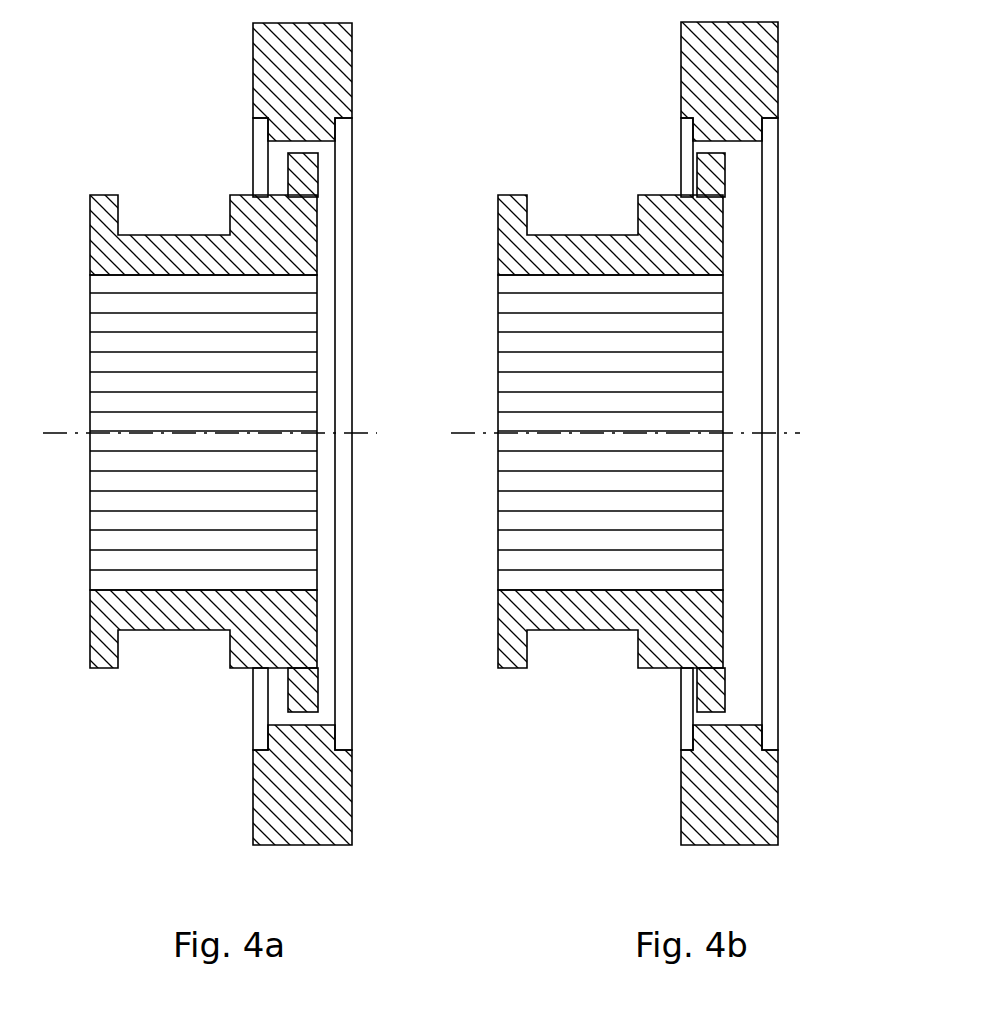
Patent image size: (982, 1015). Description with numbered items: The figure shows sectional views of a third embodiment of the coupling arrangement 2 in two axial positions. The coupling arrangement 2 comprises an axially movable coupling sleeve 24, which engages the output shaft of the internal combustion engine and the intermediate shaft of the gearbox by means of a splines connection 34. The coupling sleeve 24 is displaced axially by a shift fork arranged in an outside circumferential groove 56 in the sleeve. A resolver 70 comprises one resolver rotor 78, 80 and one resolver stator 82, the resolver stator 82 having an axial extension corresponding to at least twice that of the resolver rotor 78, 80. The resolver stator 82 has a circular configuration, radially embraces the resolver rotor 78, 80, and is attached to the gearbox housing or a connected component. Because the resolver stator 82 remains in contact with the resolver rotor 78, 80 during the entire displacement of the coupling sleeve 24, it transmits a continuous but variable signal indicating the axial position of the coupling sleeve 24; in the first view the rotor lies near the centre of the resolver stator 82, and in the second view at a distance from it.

In FIG. 4a, the coupling arrangement 2 is at (88, 703).
In FIG. 4b, the coupling arrangement 2 is at (498, 703).
In FIG. 4a, the axially movable coupling sleeve 24 is at (313, 640).
In FIG. 4b, the axially movable coupling sleeve 24 is at (725, 647).
In FIG. 4a, the splines connection 34 is at (102, 548).
In FIG. 4b, the splines connection 34 is at (512, 548).
In FIG. 4a, the outside circumferential groove 56 is at (158, 235).
In FIG. 4b, the outside circumferential groove 56 is at (568, 235).
In FIG. 4a, the resolver 70 is at (385, 690).
In FIG. 4b, the resolver 70 is at (805, 705).
In FIG. 4a, the resolver rotor 78 is at (320, 178).
In FIG. 4b, the resolver rotor 78 is at (727, 188).
In FIG. 4a, the resolver rotor 80 is at (303, 175).
In FIG. 4b, the resolver rotor 80 is at (711, 175).
In FIG. 4a, the resolver stator 82 is at (253, 790).
In FIG. 4b, the resolver stator 82 is at (682, 793).